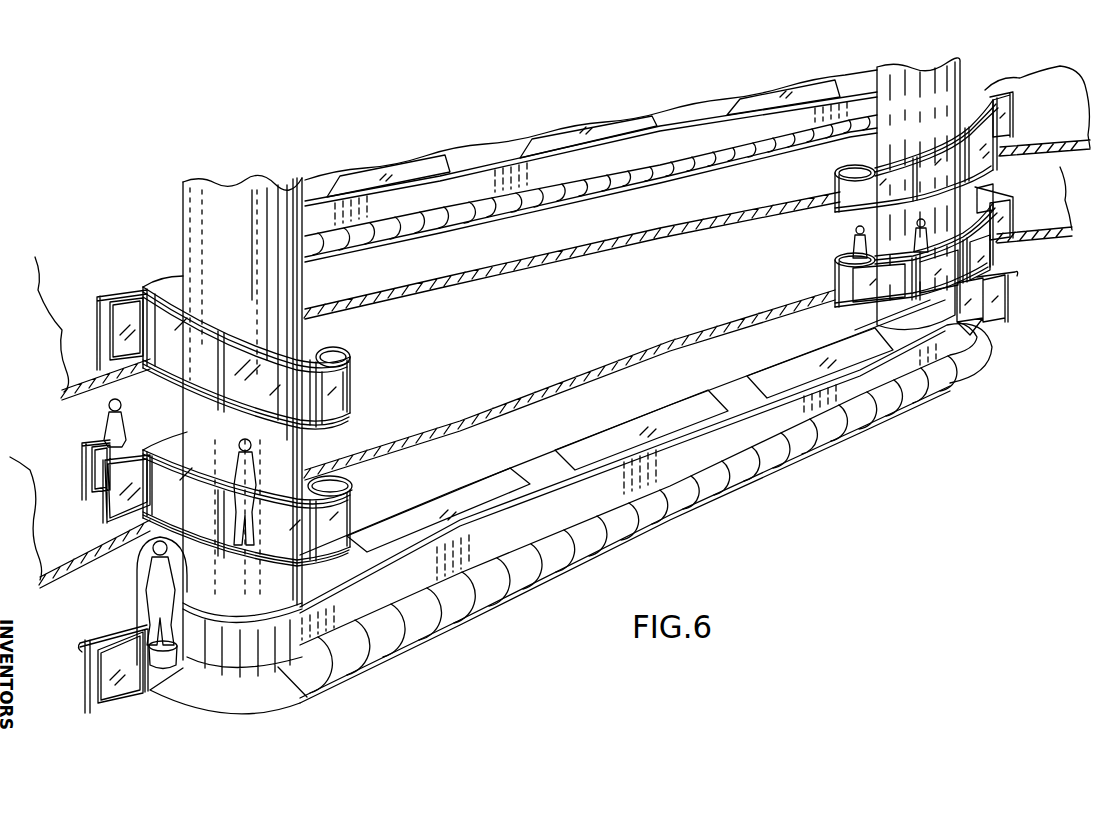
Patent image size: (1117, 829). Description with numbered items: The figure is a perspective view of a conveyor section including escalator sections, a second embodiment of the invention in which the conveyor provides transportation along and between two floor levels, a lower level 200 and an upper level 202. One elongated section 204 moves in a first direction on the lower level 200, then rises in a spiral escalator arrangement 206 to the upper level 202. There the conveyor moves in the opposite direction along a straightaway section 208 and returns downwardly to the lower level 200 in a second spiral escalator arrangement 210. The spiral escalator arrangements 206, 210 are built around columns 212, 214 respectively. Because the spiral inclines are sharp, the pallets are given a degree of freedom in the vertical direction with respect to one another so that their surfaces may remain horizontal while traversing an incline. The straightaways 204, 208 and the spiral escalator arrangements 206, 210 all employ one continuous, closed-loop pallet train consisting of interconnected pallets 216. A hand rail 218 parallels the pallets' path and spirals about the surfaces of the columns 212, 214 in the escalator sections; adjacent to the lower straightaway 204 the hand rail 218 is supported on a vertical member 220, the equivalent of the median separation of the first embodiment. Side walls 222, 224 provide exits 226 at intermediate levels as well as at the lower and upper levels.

The lower level 200 is at (580, 376).
The upper level 202 is at (60, 322).
The elongated section 204 is at (800, 448).
The spiral escalator arrangement 206 is at (1012, 160).
The straightaway section 208 is at (607, 160).
The second spiral escalator arrangement 210 is at (374, 378).
The column 212 is at (932, 90).
The column 214 is at (230, 207).
The pallets 216 is at (512, 206).
The hand rail 218 is at (548, 490).
The vertical member 220 is at (598, 436).
The side wall 222 is at (993, 259).
The side wall 224 is at (352, 392).
The exits 226 is at (145, 292).